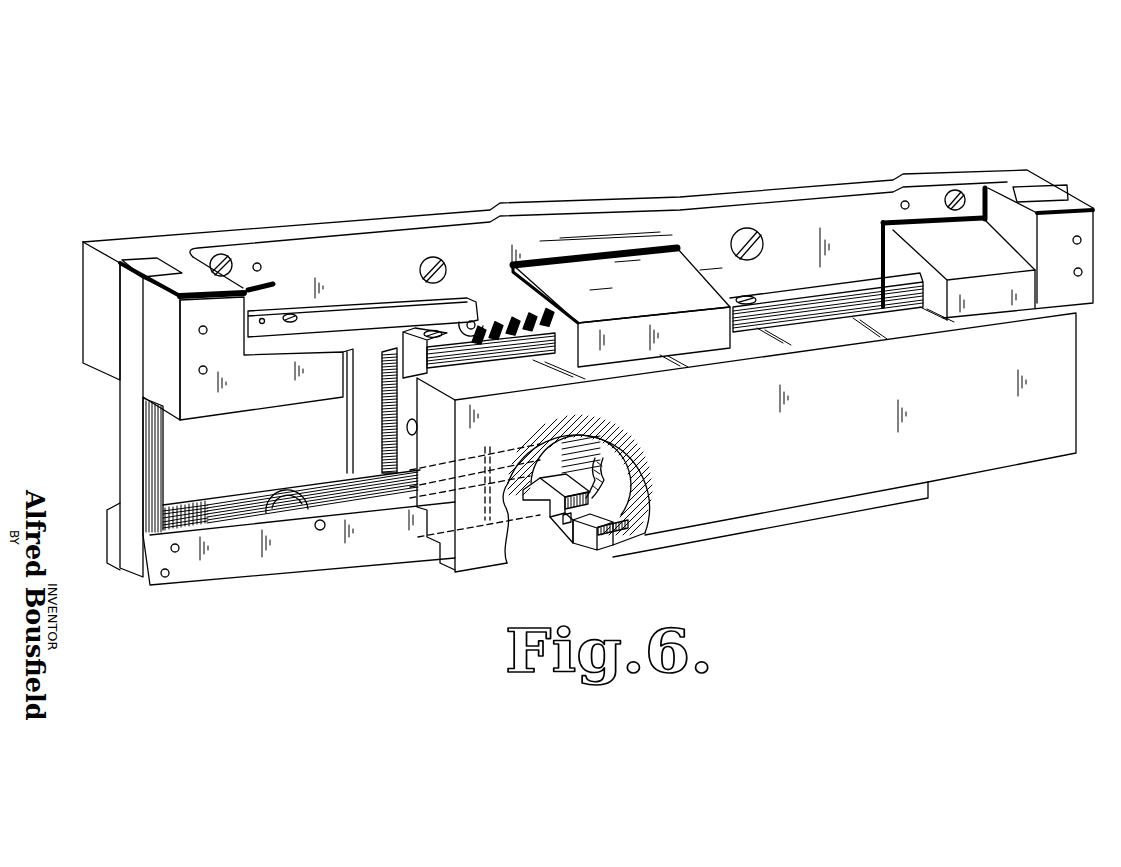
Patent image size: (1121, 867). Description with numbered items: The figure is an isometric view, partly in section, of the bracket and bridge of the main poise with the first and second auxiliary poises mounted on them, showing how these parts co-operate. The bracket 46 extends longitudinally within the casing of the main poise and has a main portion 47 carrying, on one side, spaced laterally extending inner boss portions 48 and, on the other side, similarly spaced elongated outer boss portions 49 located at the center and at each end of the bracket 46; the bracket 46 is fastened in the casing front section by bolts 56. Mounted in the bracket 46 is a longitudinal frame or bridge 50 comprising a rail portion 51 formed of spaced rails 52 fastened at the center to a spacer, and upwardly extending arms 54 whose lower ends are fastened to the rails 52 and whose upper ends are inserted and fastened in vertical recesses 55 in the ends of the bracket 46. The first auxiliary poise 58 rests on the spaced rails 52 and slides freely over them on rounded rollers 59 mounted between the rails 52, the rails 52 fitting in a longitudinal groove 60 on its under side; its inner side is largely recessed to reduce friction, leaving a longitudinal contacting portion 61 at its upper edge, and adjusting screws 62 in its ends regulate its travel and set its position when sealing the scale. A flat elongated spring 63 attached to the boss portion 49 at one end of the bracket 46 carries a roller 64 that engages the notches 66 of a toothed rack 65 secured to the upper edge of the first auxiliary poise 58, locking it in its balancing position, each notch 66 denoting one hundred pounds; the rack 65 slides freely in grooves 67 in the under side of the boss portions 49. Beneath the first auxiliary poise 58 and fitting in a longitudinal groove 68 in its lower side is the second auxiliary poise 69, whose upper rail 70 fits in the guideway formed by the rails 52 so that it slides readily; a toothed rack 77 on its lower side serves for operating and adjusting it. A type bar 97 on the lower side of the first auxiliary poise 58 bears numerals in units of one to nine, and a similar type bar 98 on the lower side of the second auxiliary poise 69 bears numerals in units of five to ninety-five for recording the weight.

The bracket 46 is at (82, 300).
The main portion 47 is at (355, 228).
The inner boss portions 48 is at (185, 233).
The outer boss portions 49 is at (295, 400).
The bridge 50 is at (130, 533).
The rail portion 51 is at (170, 527).
The rails 52 is at (260, 486).
The arms 54 is at (118, 438).
The vertical recesses 55 is at (142, 258).
The bolts 56 is at (232, 256).
The first auxiliary poise 58 is at (965, 455).
The rollers 59 is at (285, 503).
The longitudinal groove 60 is at (612, 455).
The contacting portion 61 is at (343, 398).
The adjusting screws 62 is at (378, 432).
The flat elongated spring 63 is at (385, 302).
The roller 64 is at (479, 314).
The toothed rack 65 is at (518, 347).
The notches 66 is at (492, 322).
The grooves 67 is at (555, 337).
The longitudinal groove 68 is at (645, 537).
The second auxiliary poise 69 is at (543, 500).
The rail 70 is at (566, 520).
The toothed rack 77 is at (558, 530).
The type bar 97 is at (775, 530).
The type bar 98 is at (585, 540).